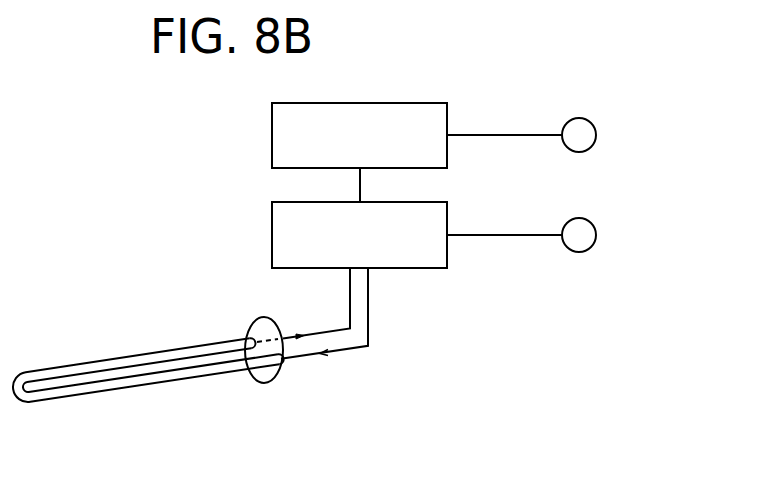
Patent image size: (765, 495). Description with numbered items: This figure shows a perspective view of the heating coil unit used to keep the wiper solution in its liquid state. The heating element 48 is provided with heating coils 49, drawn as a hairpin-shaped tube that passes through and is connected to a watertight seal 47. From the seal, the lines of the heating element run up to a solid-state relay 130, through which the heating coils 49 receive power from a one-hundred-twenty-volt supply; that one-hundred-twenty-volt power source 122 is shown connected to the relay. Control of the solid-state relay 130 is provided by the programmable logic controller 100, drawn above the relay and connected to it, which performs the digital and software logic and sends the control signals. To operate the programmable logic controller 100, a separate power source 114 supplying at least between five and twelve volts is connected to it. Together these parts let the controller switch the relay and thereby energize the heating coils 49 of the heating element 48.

The programmable logic controller 100 is at (387, 103).
The power source 114 is at (505, 135).
The 120-volt power source 122 is at (510, 235).
The solid-state relay 130 is at (428, 268).
The watertight seal 47 is at (277, 378).
The heating element 48 is at (207, 386).
The heating coils 49 is at (148, 355).